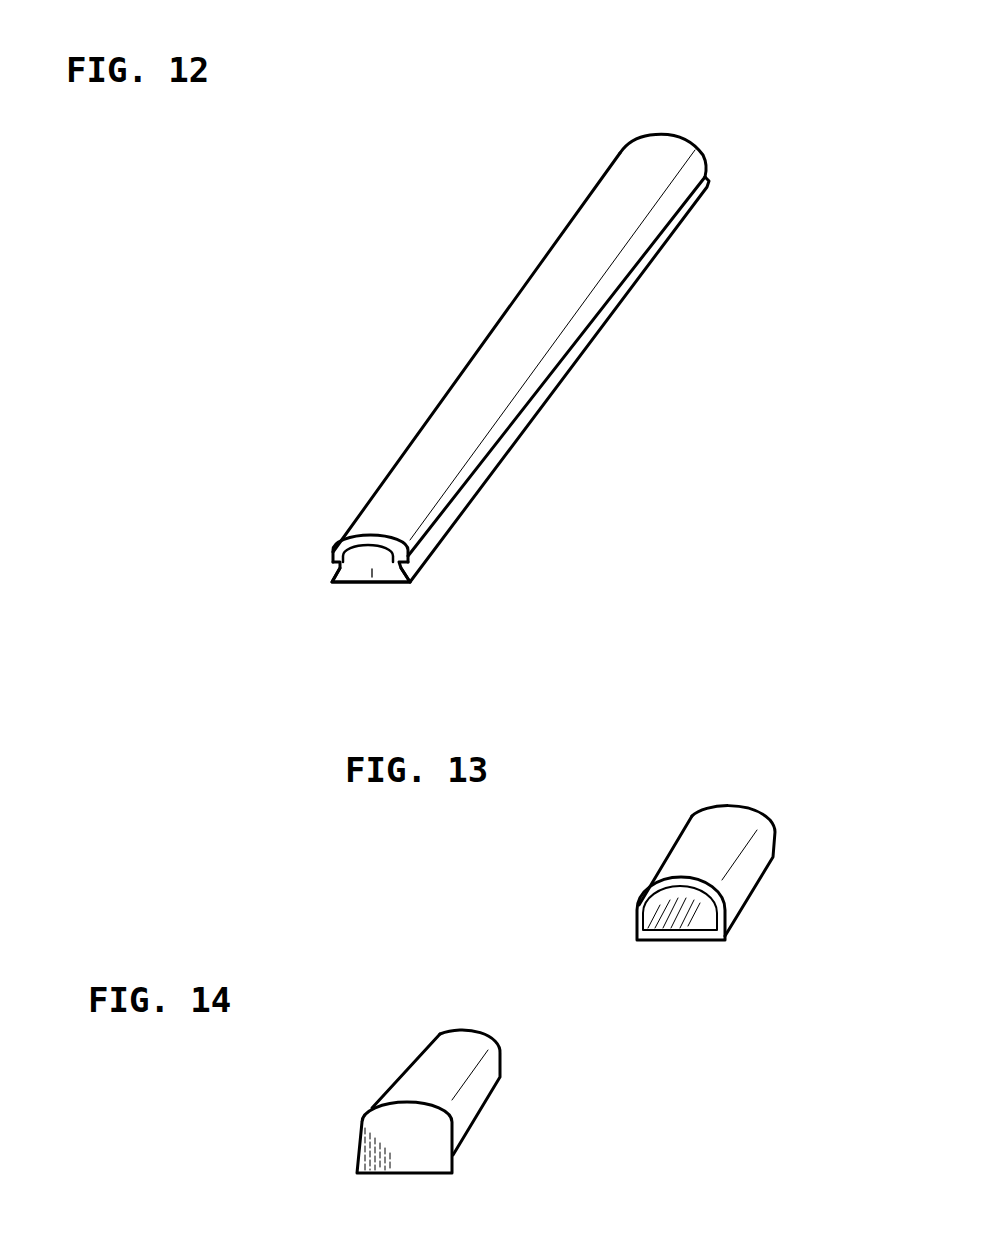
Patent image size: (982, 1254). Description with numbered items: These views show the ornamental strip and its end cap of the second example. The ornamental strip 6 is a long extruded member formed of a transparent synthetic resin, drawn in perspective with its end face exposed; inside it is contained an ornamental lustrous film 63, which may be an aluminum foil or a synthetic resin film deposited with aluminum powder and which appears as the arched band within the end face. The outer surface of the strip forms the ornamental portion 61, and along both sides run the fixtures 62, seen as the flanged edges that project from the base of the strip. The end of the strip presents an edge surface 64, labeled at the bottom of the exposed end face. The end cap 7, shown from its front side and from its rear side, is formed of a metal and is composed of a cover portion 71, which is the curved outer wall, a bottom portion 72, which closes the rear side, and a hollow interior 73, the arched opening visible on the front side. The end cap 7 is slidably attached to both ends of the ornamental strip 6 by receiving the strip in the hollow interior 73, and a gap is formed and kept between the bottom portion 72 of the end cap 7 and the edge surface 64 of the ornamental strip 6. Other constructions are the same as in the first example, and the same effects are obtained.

In FIG. 12, the ornamental strip 6 is at (471, 402).
In FIG. 12, the ornamental portion 61 is at (465, 397).
In FIG. 12, the fixtures 62 is at (641, 259).
In FIG. 12, the ornamental lustrous film 63 is at (367, 540).
In FIG. 12, the edge surface 64 is at (372, 583).
In FIG. 13, the end cap 7 is at (692, 870).
In FIG. 14, the end cap 7 is at (417, 1116).
In FIG. 13, the cover portion 71 is at (722, 843).
In FIG. 14, the cover portion 71 is at (445, 1078).
In FIG. 14, the bottom portion 72 is at (427, 1147).
In FIG. 13, the hollow interior 73 is at (698, 896).